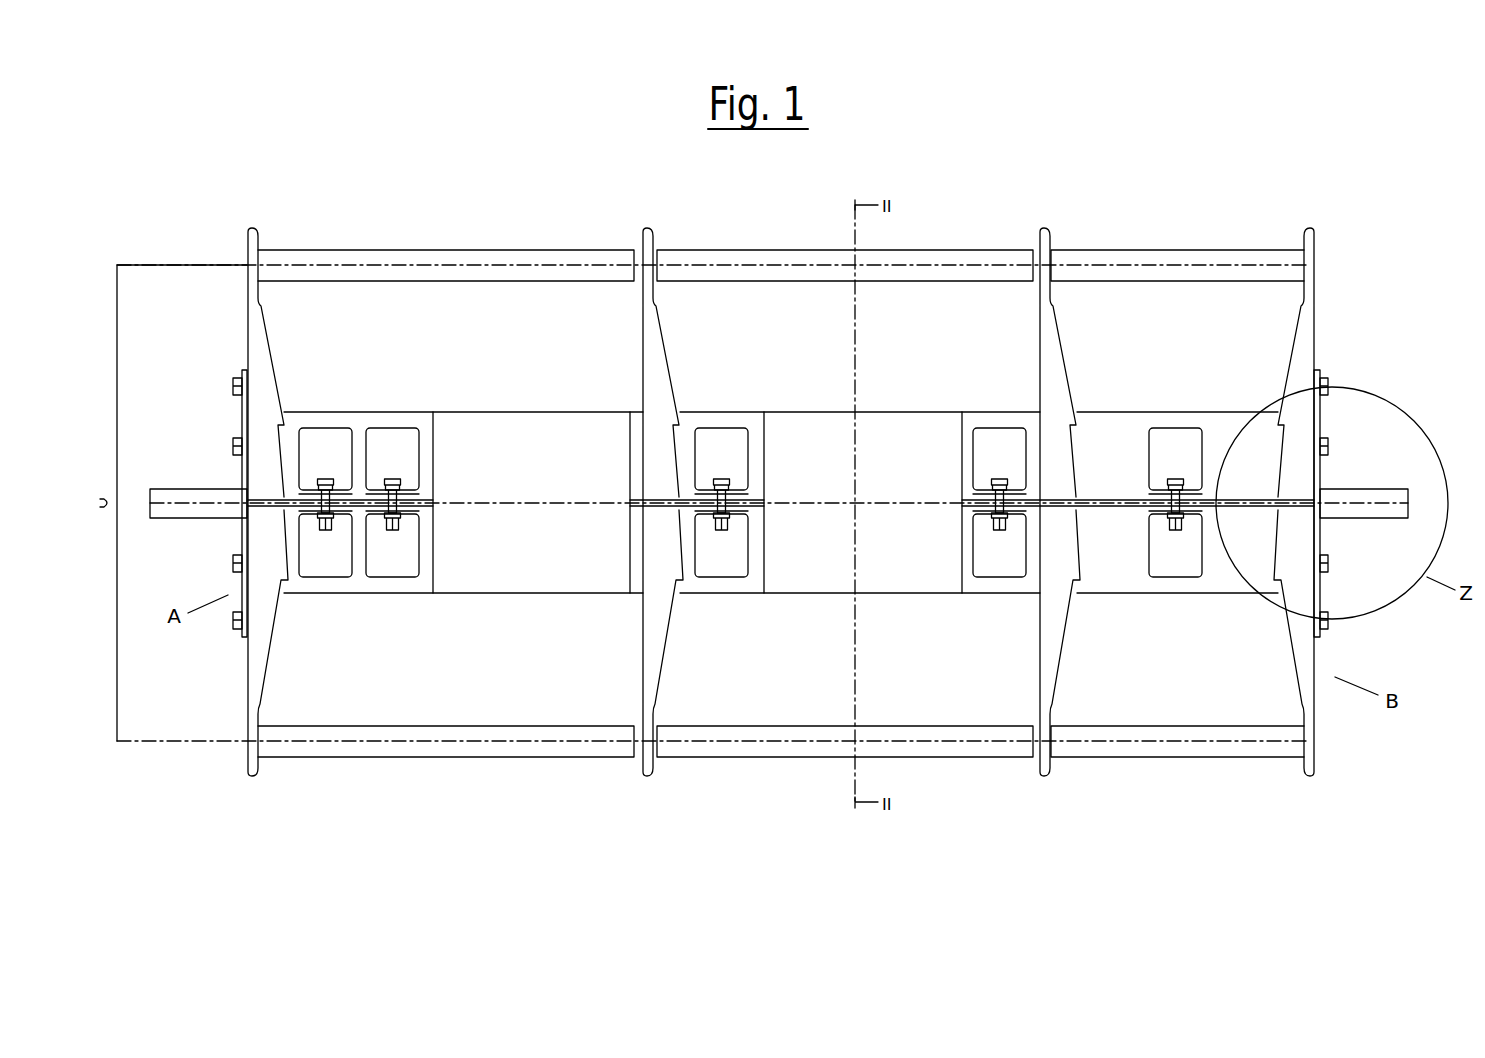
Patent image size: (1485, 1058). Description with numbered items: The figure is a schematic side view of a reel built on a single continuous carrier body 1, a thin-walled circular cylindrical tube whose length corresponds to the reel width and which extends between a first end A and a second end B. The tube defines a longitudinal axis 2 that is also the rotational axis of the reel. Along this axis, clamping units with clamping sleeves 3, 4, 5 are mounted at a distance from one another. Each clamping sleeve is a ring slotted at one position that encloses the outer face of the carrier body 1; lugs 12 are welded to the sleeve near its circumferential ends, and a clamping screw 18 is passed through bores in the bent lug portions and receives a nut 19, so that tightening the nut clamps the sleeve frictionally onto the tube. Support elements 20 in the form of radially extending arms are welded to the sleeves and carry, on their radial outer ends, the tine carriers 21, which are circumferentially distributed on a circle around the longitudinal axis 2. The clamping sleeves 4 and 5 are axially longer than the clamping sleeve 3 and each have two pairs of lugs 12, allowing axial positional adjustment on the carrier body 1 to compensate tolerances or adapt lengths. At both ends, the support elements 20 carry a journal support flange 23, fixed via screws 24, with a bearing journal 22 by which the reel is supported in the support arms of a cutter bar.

The carrier body 1 is at (877, 577).
The longitudinal axis 2 is at (543, 505).
The clamping sleeve 3 is at (715, 585).
The clamping sleeve 4 is at (1113, 573).
The clamping sleeve 5 is at (375, 587).
The lug 12 is at (325, 440).
The clamping screw 18 is at (727, 483).
The nut 19 is at (730, 522).
The support element 20 is at (272, 670).
The tine carrier 21 is at (955, 258).
The bearing journal 22 is at (215, 512).
The journal support flange 23 is at (241, 408).
The screw 24 is at (233, 388).